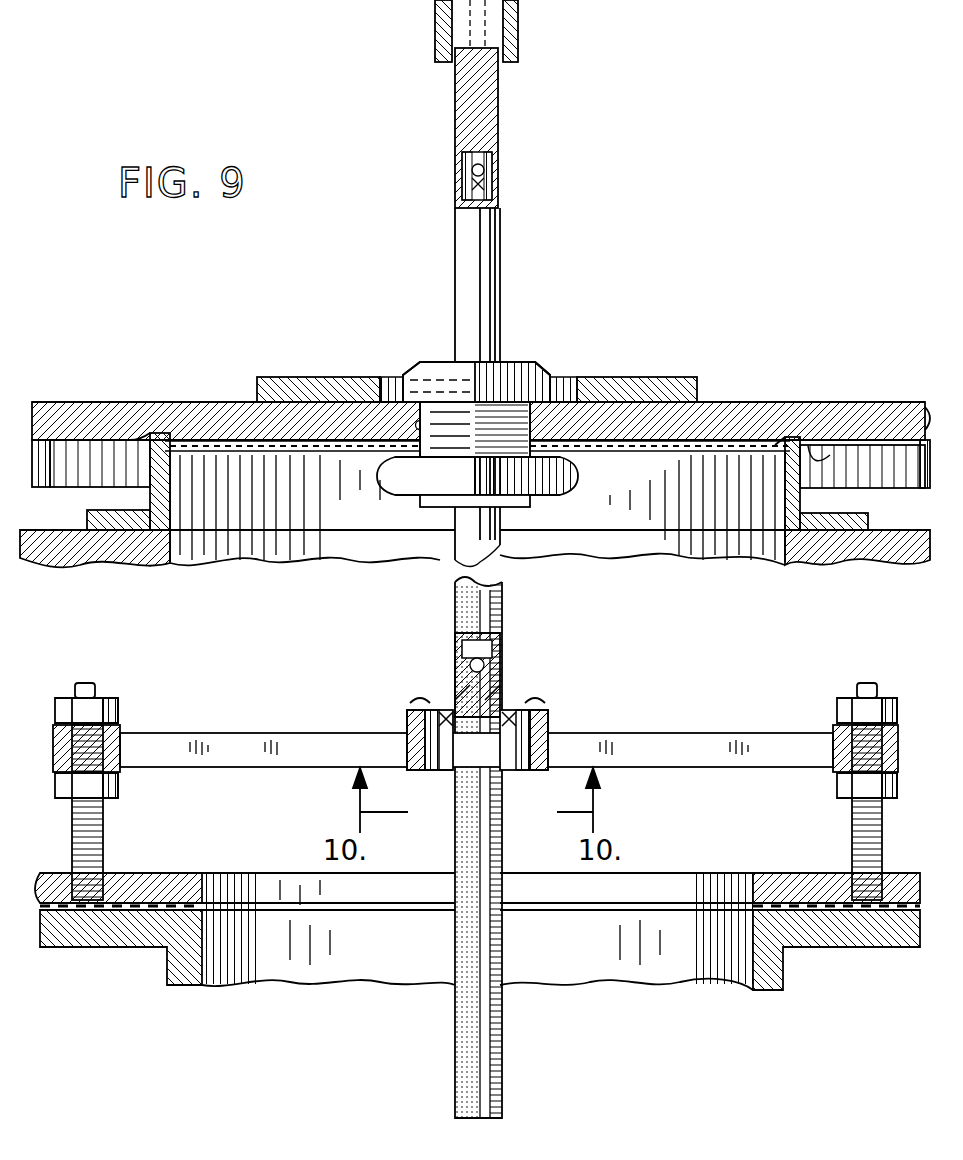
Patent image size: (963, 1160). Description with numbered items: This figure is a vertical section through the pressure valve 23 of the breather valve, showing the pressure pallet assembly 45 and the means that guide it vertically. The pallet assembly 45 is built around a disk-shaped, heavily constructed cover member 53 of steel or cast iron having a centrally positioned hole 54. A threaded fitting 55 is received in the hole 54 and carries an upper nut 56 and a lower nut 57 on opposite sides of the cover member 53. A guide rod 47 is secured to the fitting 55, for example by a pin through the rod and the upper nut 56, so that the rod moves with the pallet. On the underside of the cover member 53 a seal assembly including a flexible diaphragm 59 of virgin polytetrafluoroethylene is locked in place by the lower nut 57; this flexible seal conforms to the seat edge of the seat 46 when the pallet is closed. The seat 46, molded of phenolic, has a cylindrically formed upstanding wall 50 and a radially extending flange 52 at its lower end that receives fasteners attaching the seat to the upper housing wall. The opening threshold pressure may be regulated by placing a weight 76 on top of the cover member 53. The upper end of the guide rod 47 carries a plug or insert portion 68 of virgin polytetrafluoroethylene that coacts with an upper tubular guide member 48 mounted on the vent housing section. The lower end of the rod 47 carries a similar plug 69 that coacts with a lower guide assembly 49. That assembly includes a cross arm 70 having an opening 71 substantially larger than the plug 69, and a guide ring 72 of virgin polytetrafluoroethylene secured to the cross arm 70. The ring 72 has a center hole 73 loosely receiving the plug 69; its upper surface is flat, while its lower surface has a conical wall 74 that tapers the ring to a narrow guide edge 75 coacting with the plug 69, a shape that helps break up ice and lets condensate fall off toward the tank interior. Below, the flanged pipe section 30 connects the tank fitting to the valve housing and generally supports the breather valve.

The upper tubular guide member 48 is at (505, 30).
The plug or insert portion 68 is at (500, 106).
The guide rod 47 is at (440, 248).
The pressure valve 23 is at (534, 340).
The weight 76 is at (295, 388).
The upper nut 56 is at (433, 368).
The hole 54 is at (415, 425).
The cover member 53 is at (777, 405).
The pressure pallet assembly 45 is at (728, 390).
The diaphragm 59 is at (832, 456).
The upstanding wall 50 is at (783, 455).
The lower nut 57 is at (385, 477).
The threaded fitting 55 is at (512, 437).
The seat 46 is at (782, 496).
The flange 52 is at (845, 530).
The lower guide assembly 49 is at (554, 700).
The guide edge 75 is at (450, 703).
The guide ring 72 is at (432, 712).
The center hole 73 is at (503, 692).
The opening 71 is at (505, 770).
The conical wall 74 is at (440, 770).
The cross arm 70 is at (690, 745).
The pipe section 30 is at (780, 975).
The plug or insert portion 69 is at (480, 1036).